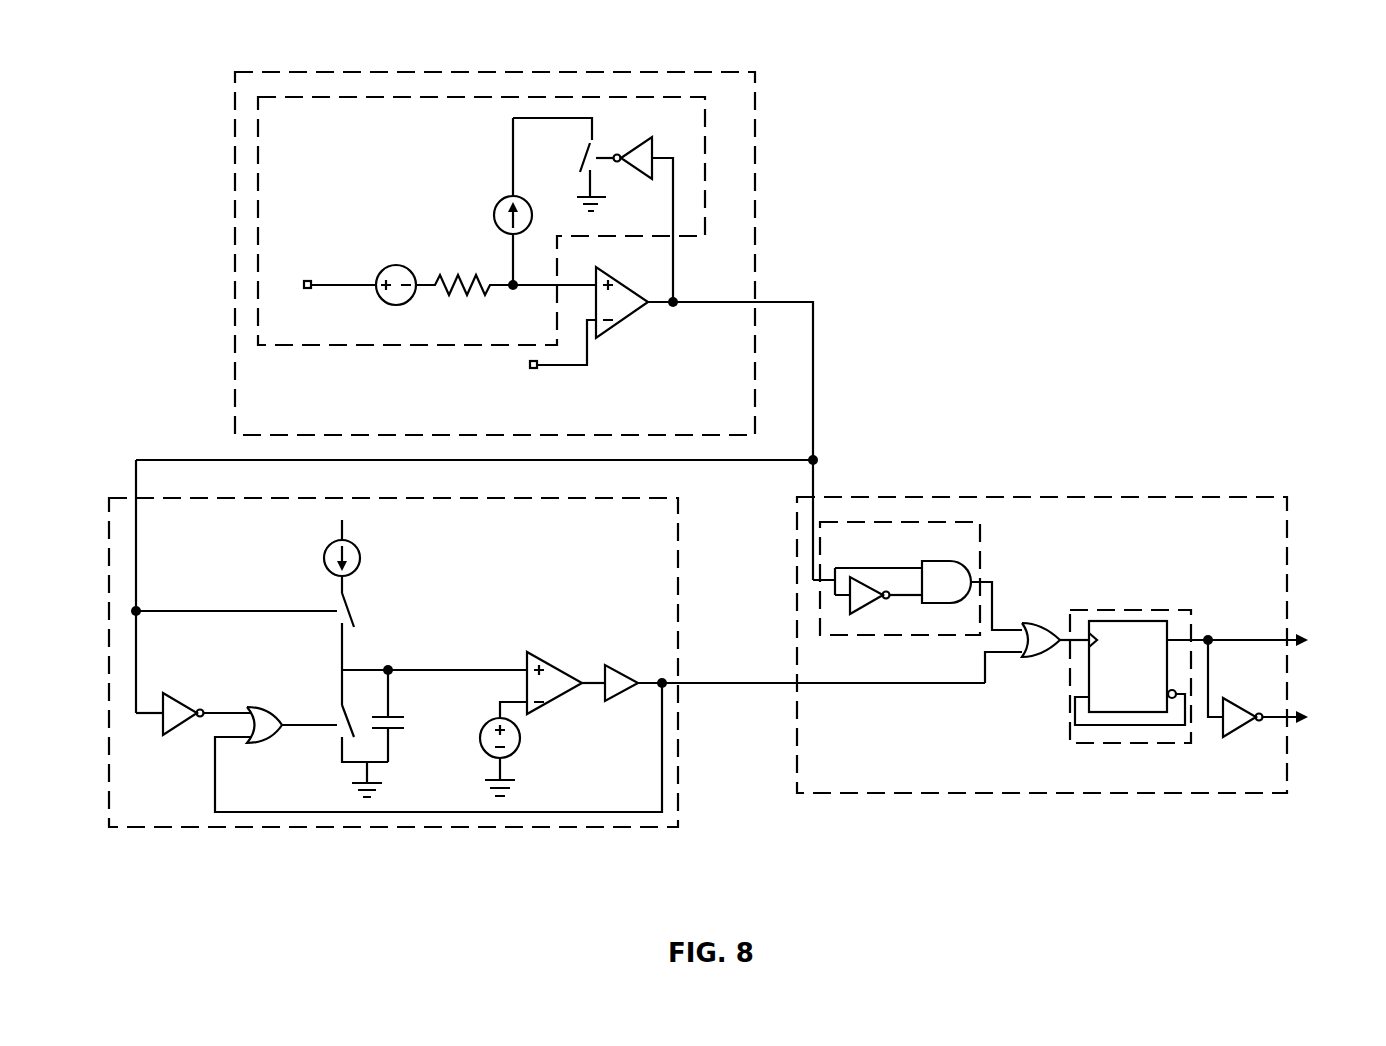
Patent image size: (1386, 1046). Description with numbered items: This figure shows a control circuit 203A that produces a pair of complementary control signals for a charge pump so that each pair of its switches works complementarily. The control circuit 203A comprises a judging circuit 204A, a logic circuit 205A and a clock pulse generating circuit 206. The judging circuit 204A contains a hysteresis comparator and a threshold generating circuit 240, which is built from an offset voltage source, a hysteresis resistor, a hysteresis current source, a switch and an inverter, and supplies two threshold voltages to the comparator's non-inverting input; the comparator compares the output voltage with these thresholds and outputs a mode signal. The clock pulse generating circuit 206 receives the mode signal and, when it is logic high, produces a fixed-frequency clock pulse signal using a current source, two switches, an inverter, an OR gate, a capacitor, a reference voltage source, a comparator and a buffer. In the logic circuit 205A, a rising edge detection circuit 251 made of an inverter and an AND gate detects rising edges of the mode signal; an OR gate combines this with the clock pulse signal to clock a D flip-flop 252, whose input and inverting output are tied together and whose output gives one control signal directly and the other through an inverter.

The control circuit 203A is at (1078, 128).
The threshold generating circuit 240 is at (340, 142).
The judging circuit 204A is at (729, 415).
The clock pulse generating circuit 206 is at (660, 545).
The logic circuit 205A is at (1254, 550).
The rising edge detection circuit 251 is at (878, 642).
The D flip-flop 252 is at (1097, 748).